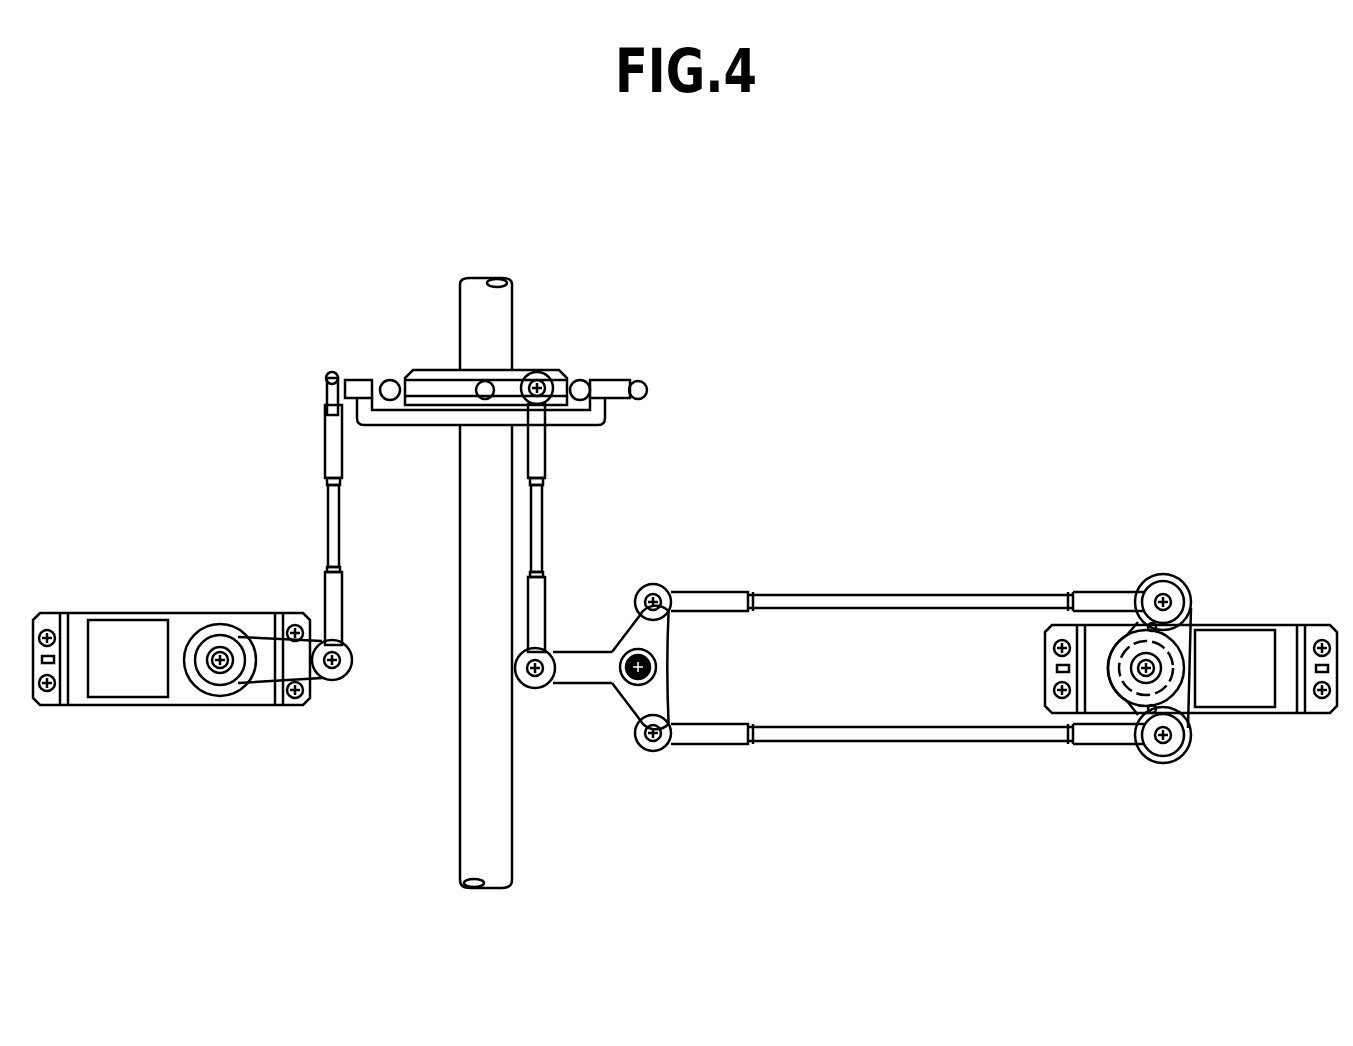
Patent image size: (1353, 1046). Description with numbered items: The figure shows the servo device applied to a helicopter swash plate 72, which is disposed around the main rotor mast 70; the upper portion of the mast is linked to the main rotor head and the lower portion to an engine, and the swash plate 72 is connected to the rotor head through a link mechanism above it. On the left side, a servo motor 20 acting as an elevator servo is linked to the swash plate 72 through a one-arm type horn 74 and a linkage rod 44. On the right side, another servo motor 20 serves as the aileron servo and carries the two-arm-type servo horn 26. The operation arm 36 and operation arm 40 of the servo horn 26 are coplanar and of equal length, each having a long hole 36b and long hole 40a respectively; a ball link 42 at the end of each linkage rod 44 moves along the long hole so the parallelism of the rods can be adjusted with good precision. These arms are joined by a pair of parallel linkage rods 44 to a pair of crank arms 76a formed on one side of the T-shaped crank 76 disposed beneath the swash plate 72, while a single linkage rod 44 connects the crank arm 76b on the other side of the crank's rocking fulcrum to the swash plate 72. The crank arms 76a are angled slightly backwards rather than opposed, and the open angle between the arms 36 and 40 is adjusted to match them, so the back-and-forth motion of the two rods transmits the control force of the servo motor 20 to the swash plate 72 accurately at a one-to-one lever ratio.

The servo motor 20 is at (135, 613).
The servo horn 26 is at (1170, 560).
The operation arm 36 is at (1202, 622).
The long hole 36b is at (1198, 630).
The operation arm 40 is at (1201, 691).
The long hole 40a is at (1188, 712).
The ball link 42 is at (1158, 596).
The linkage rod 44 is at (325, 522).
The main rotor mast 70 is at (468, 780).
The swash plate 72 is at (537, 372).
The one-arm type horn 74 is at (265, 675).
The T-shaped crank 76 is at (640, 689).
The crank arm 76a is at (655, 632).
The crank arm 76b is at (572, 678).